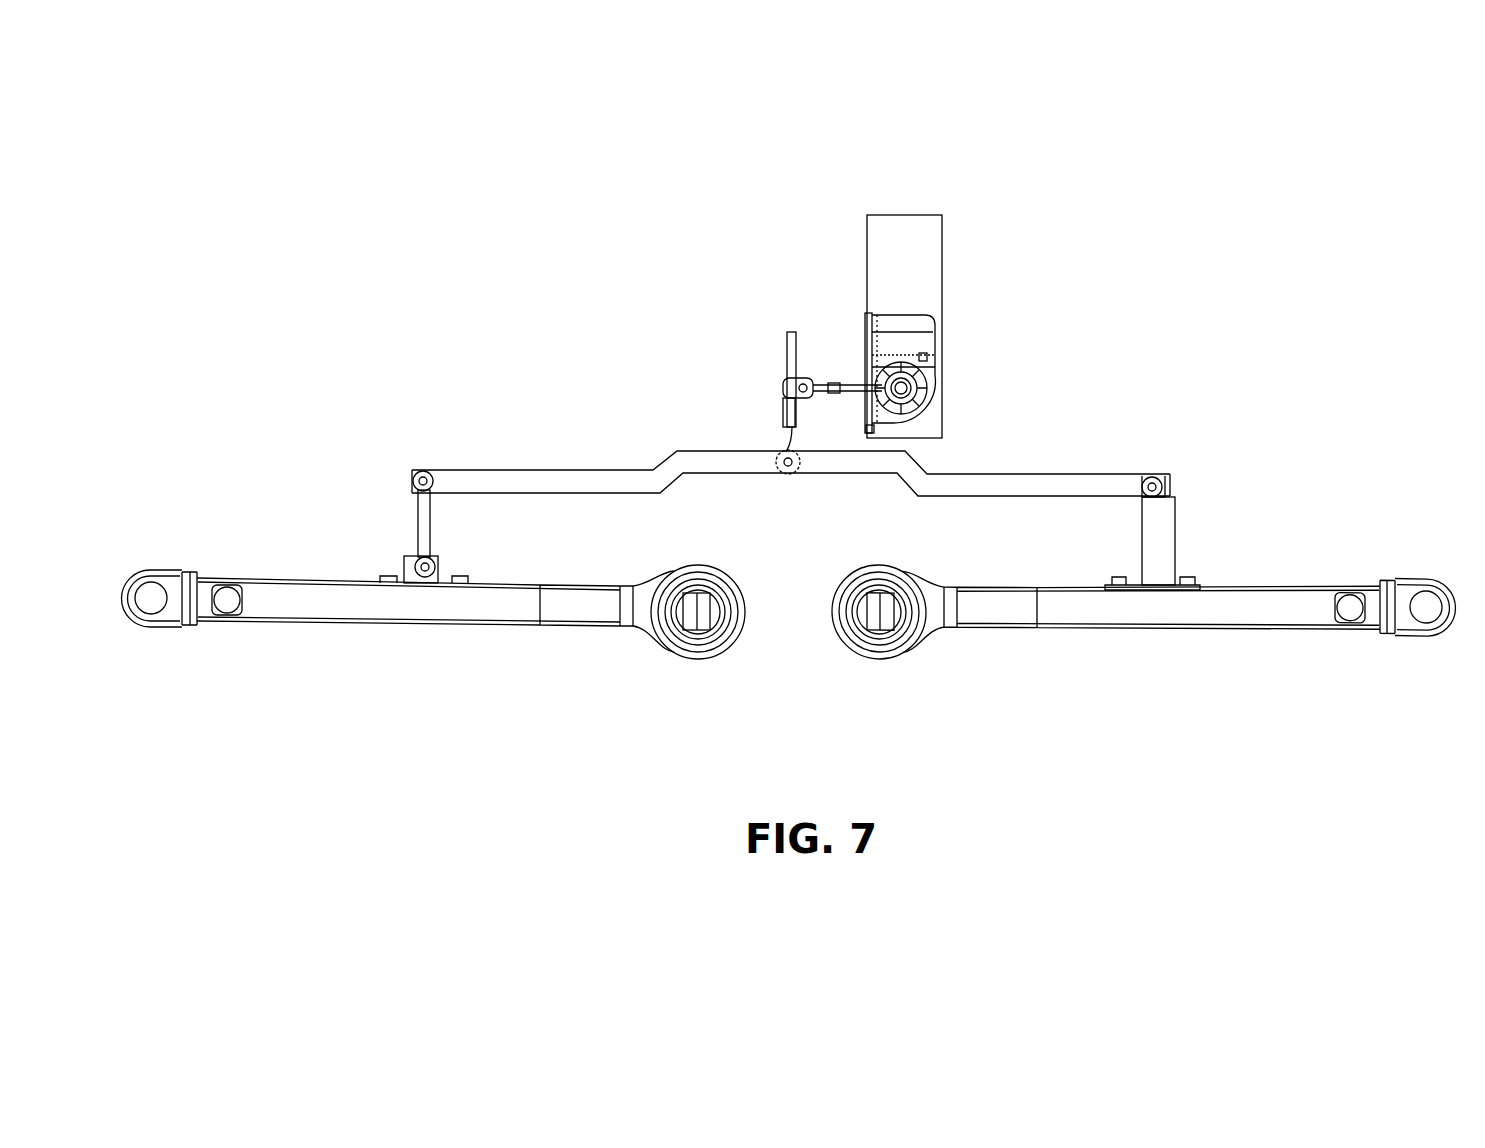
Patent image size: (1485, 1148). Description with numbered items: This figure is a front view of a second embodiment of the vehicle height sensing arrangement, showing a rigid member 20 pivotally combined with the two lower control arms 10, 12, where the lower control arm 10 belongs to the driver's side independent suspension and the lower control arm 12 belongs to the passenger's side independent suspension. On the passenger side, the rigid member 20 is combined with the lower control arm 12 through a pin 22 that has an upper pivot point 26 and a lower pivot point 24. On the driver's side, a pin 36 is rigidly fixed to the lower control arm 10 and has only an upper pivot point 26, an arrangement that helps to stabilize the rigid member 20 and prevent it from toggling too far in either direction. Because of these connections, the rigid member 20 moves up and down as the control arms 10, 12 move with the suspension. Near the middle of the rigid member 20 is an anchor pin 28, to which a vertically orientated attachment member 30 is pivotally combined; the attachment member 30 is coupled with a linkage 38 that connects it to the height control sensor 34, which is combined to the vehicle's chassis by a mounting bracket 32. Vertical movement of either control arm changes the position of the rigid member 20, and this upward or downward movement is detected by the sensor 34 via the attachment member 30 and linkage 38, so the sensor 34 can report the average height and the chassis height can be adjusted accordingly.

The lower control arm 10 is at (1235, 603).
The lower control arm 12 is at (375, 605).
The rigid member 20 is at (1075, 487).
The pin 22 is at (424, 527).
The lower pivot point 24 is at (428, 567).
The upper pivot point 26 is at (1303, 394).
The anchor pin 28 is at (830, 514).
The attachment member 30 is at (792, 352).
The mounting bracket 32 is at (946, 244).
The sensor 34 is at (915, 340).
The pin 36 is at (1158, 537).
The linkage 38 is at (840, 388).